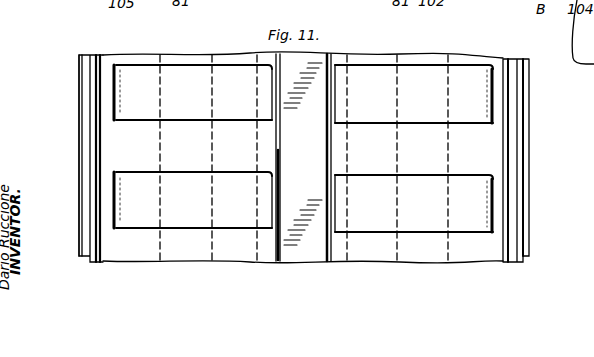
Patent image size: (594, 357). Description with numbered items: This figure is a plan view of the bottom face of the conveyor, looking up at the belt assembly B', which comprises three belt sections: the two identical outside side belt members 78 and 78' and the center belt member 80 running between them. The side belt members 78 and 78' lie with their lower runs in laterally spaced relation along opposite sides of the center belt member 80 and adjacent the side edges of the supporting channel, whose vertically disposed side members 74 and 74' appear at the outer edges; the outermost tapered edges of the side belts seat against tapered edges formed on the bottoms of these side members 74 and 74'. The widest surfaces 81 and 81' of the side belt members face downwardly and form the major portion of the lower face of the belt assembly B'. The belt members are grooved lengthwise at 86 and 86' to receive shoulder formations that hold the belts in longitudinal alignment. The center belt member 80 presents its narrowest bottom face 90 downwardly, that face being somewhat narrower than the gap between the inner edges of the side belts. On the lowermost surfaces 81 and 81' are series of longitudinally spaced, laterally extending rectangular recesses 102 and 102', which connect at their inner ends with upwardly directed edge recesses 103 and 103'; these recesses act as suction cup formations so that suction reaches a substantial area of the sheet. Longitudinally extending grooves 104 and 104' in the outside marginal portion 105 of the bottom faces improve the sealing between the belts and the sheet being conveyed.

The side member 74 is at (529, 160).
The side member 74' is at (72, 158).
The side belt member 78 is at (442, 172).
The side belt member 78' is at (177, 172).
The center belt member 80 is at (313, 251).
The widest surface 81 is at (372, 172).
The widest surface 81' is at (150, 173).
The groove 86 is at (414, 49).
The groove 86' is at (194, 46).
The bottom face 90 is at (290, 251).
The recess 102 is at (414, 151).
The recess 102' is at (193, 146).
The edge recess 103 is at (356, 148).
The edge recess 103' is at (247, 148).
The groove 104 is at (537, 160).
The groove 104' is at (67, 155).
The outside marginal portion 105 is at (500, 200).
The belt assembly B' is at (303, 41).